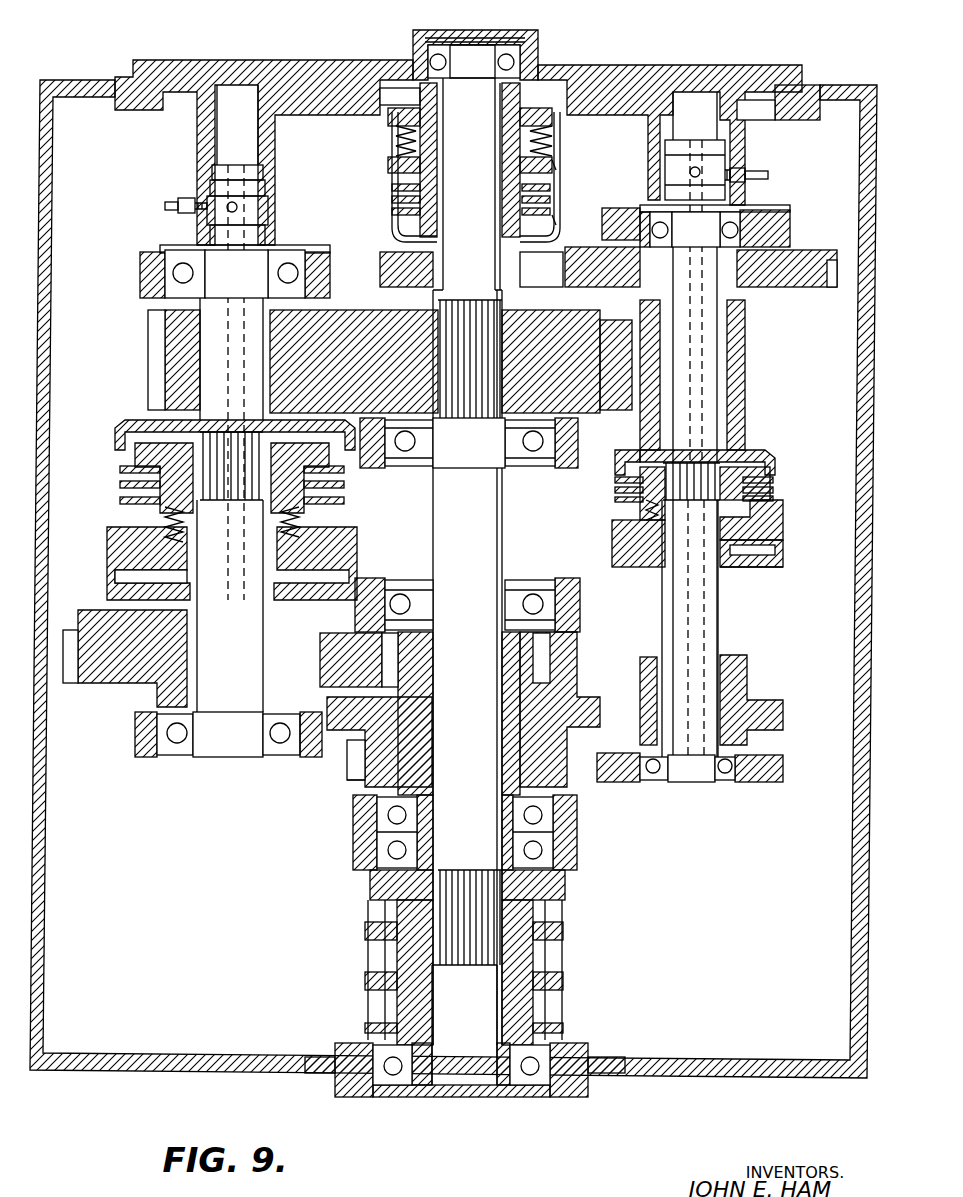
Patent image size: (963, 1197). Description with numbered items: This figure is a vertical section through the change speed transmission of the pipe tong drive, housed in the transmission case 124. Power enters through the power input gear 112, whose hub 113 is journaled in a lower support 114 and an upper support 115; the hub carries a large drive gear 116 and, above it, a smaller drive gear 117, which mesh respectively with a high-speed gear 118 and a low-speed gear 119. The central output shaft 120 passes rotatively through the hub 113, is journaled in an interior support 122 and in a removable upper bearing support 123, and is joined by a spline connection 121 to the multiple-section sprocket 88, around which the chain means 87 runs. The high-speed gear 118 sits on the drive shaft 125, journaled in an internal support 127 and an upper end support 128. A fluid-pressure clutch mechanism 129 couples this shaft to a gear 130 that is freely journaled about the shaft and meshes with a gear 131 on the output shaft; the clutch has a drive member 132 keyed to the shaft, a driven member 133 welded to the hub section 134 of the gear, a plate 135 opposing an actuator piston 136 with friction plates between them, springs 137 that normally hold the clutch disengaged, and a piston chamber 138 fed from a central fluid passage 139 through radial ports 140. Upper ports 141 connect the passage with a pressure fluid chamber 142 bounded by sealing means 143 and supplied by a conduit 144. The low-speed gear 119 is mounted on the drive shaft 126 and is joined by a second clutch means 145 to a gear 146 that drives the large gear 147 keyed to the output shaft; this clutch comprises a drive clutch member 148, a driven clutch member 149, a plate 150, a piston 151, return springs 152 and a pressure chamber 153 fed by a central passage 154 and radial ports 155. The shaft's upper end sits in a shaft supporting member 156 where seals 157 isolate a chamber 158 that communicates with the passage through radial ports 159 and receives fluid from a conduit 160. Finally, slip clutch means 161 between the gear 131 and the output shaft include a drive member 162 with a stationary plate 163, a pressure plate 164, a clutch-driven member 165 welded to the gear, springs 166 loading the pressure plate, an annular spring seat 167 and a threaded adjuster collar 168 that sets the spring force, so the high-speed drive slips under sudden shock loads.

The chain means 87 is at (560, 980).
The sprocket 88 is at (375, 950).
The power input gear 112 is at (345, 762).
The hub 113 is at (352, 785).
The lower support 114 is at (578, 853).
The support 115 is at (575, 600).
The large drive gear 116 is at (548, 705).
The smaller drive gear 117 is at (548, 650).
The high-speed gear 118 is at (760, 705).
The low-speed gear 119 is at (350, 640).
The central shaft 120 is at (503, 512).
The spline connection 121 is at (370, 882).
The support 122 is at (392, 468).
The bearing support 123 is at (400, 68).
The transmission case 124 is at (838, 84).
The drive shaft 125 is at (718, 622).
The drive shaft 126 is at (185, 655).
The internal support 127 is at (768, 782).
The upper end support 128 is at (650, 70).
The clutch mechanism 129 is at (785, 555).
The gear 130 is at (612, 287).
The gear 131 is at (555, 282).
The drive member 132 is at (640, 452).
The driven member 133 is at (775, 455).
The hub section 134 is at (745, 405).
The plate 135 is at (775, 470).
The actuator piston 136 is at (783, 512).
The springs 137 is at (645, 560).
The piston chamber 138 is at (765, 560).
The central fluid passage 139 is at (705, 360).
The radial ports 140 is at (718, 590).
The ports 141 is at (690, 172).
The pressure fluid chamber 142 is at (672, 172).
The sealing means 143 is at (725, 190).
The conduit 144 is at (770, 178).
The clutch means 145 is at (107, 592).
The gear 146 is at (165, 370).
The large gear 147 is at (378, 312).
The drive clutch member 148 is at (120, 470).
The driven clutch member 149 is at (118, 428).
The plate 150 is at (135, 450).
The piston 151 is at (135, 520).
The springs 152 is at (282, 570).
The pressure chamber 153 is at (115, 576).
The central passage 154 is at (222, 330).
The radial ports 155 is at (125, 656).
The shaft supporting member 156 is at (262, 66).
The seals 157 is at (265, 232).
The chamber 158 is at (270, 212).
The radial ports 159 is at (268, 192).
The conduit 160 is at (172, 202).
The slip clutch means 161 is at (390, 238).
The drive member 162 is at (552, 188).
The stationary plate 163 is at (556, 236).
The pressure plate 164 is at (552, 166).
The clutch-driven member 165 is at (555, 220).
The springs 166 is at (392, 146).
The annular spring seat 167 is at (552, 132).
The adjuster collar 168 is at (540, 85).